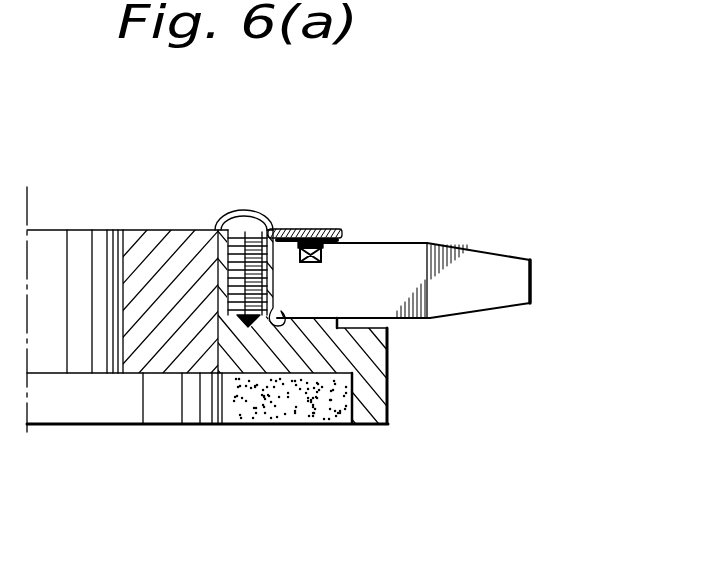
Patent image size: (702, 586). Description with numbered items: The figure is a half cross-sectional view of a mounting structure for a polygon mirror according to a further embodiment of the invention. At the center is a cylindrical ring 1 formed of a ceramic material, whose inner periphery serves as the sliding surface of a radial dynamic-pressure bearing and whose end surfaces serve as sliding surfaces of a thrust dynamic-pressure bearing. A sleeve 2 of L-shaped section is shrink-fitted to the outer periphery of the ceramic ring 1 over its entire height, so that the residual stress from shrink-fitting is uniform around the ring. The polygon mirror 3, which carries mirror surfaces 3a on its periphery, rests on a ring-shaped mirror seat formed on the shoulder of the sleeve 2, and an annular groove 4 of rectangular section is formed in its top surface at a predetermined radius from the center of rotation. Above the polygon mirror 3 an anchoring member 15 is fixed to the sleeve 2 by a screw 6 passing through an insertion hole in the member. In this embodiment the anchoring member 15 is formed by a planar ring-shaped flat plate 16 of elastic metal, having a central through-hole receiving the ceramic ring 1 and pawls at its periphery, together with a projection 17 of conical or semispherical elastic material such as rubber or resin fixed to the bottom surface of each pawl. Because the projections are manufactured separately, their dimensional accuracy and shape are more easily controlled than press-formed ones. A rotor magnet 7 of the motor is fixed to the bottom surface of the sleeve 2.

The cylindrical ring 1 is at (155, 247).
The sleeve 2 is at (368, 352).
The polygon mirror 3 is at (411, 263).
The mirror surfaces 3a is at (531, 279).
The annular groove 4 is at (313, 262).
The screw 6 is at (238, 222).
The rotor magnet 7 is at (284, 407).
The anchoring member 15 is at (287, 220).
The flat plate 16 is at (317, 230).
The projection 17 is at (325, 254).